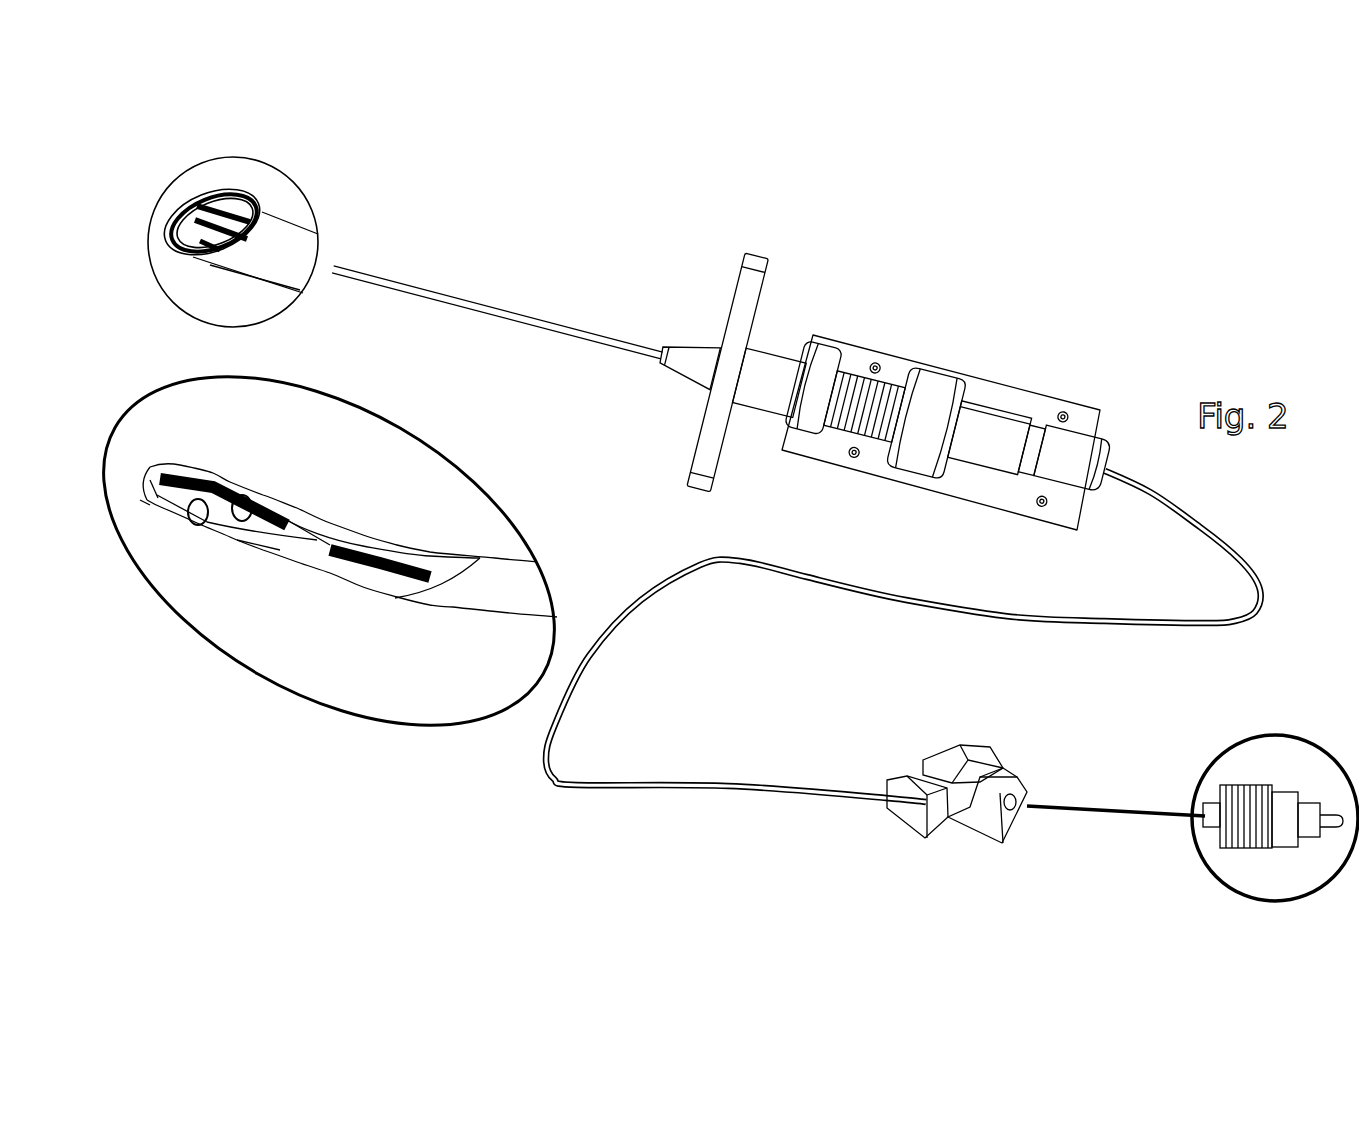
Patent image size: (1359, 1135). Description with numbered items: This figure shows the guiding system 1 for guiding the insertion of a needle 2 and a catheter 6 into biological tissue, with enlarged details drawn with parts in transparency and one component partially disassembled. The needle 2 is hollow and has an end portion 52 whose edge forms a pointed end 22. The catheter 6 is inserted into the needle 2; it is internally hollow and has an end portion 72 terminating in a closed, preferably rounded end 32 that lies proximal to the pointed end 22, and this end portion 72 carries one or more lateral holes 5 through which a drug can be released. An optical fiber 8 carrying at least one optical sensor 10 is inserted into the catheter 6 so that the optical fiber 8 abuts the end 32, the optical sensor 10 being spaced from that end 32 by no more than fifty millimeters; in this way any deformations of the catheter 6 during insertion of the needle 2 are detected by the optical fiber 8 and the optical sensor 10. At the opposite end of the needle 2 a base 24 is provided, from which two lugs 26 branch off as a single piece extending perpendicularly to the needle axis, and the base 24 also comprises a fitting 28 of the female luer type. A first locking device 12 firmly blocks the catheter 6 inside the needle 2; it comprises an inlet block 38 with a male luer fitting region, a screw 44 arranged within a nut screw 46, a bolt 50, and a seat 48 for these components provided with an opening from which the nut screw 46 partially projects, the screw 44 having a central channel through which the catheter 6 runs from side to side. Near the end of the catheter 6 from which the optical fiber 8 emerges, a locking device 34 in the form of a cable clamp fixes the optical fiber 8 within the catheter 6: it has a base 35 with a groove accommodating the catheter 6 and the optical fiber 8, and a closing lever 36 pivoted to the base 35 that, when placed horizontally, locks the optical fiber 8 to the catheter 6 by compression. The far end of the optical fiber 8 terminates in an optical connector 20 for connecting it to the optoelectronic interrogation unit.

The guiding system 1 is at (1173, 240).
The needle 2 is at (492, 262).
The lateral holes 5 is at (245, 497).
The catheter 6 is at (598, 788).
The optical fiber 8 is at (1115, 813).
The optical sensor 10 is at (312, 538).
The first locking device 12 is at (968, 240).
The optical connector 20 is at (1297, 728).
The pointed end 22 is at (182, 207).
The base 24 is at (718, 322).
The lugs 26 is at (750, 283).
The fitting 28 is at (777, 383).
The end 32 is at (188, 207).
The locking device 34 is at (885, 855).
The base 35 is at (967, 836).
The closing lever 36 is at (952, 768).
The inlet block 38 is at (824, 388).
The screw 44 is at (872, 402).
The nut screw 46 is at (932, 407).
The seat 48 is at (1042, 414).
The bolt 50 is at (1078, 458).
The end portion 52 is at (193, 265).
The end portion 72 is at (150, 508).